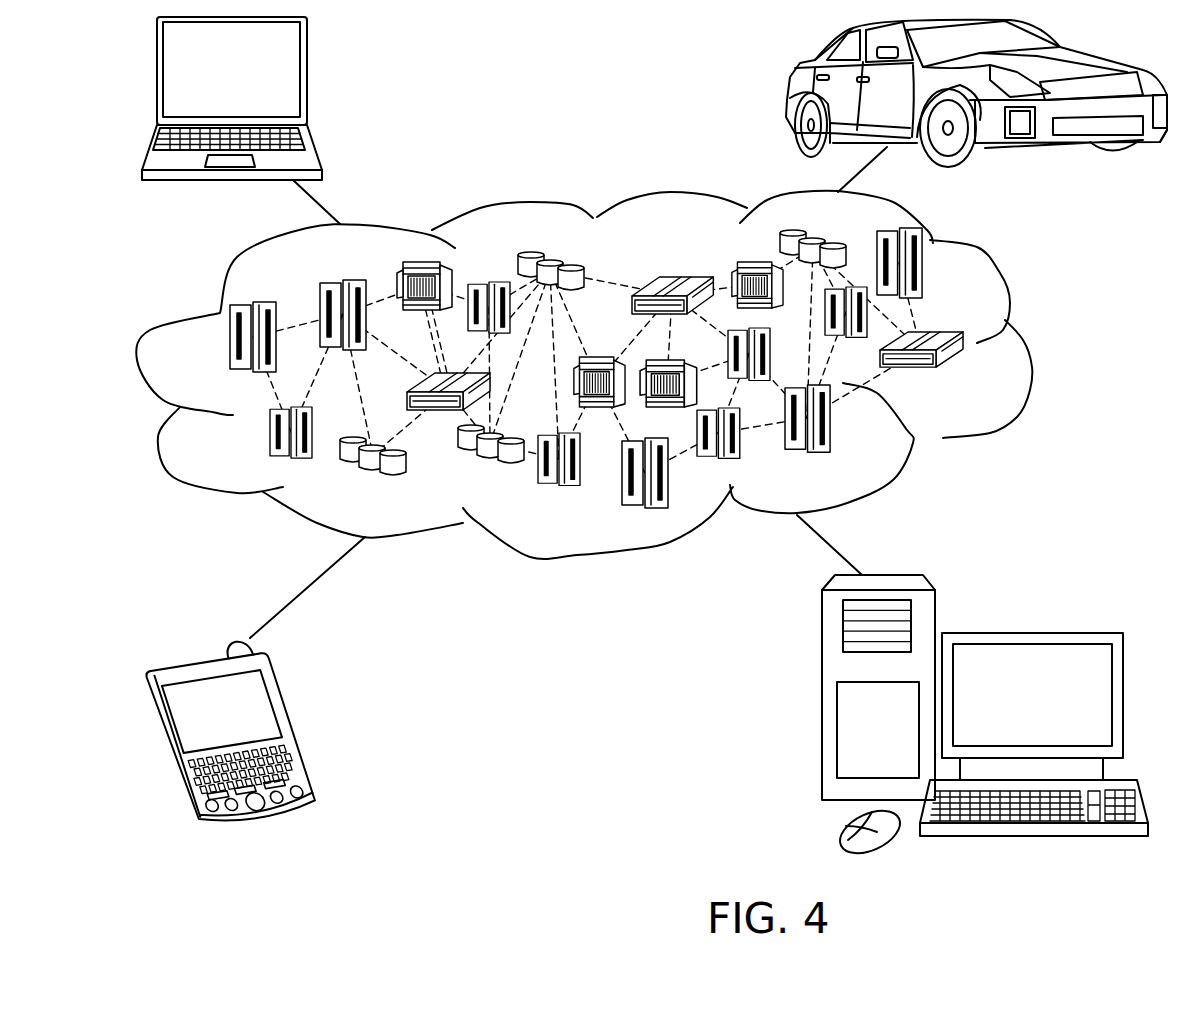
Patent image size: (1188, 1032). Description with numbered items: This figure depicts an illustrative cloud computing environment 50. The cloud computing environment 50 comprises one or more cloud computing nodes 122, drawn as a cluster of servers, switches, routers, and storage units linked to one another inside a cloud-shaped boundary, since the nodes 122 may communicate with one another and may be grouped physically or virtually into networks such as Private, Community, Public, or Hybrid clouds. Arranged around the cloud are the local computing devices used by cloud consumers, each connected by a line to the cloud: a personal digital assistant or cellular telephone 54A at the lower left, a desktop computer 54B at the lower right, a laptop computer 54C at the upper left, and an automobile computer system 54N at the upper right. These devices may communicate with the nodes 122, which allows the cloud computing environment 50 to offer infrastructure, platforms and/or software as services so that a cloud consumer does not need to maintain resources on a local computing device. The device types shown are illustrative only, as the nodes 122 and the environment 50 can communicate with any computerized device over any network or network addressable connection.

The cloud computing environment 50 is at (1030, 348).
The cloud computing nodes 122 is at (967, 378).
The personal digital assistant (PDA) or cellular telephone 54A is at (297, 725).
The desktop computer 54B is at (1028, 633).
The laptop computer 54C is at (310, 78).
The automobile computer system 54N is at (790, 93).